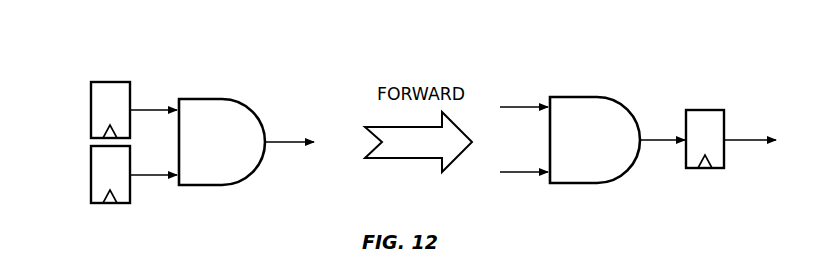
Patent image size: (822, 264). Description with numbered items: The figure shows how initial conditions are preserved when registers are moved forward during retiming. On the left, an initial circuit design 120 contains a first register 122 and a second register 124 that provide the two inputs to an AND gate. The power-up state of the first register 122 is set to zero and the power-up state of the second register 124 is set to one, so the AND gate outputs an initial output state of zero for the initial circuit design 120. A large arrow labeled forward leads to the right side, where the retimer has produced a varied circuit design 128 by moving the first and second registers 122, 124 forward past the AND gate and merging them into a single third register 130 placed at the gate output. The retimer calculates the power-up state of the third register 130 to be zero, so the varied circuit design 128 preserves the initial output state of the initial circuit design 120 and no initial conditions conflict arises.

The initial circuit design 120 is at (94, 51).
The first register 122 is at (110, 82).
The second register 124 is at (110, 204).
The varied circuit design 128 is at (564, 67).
The third register 130 is at (706, 110).